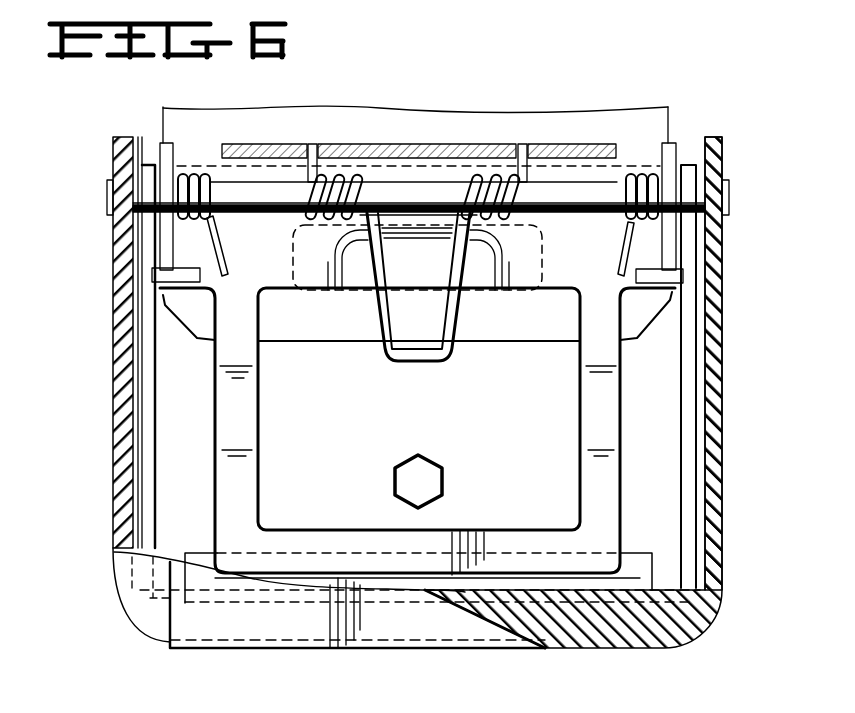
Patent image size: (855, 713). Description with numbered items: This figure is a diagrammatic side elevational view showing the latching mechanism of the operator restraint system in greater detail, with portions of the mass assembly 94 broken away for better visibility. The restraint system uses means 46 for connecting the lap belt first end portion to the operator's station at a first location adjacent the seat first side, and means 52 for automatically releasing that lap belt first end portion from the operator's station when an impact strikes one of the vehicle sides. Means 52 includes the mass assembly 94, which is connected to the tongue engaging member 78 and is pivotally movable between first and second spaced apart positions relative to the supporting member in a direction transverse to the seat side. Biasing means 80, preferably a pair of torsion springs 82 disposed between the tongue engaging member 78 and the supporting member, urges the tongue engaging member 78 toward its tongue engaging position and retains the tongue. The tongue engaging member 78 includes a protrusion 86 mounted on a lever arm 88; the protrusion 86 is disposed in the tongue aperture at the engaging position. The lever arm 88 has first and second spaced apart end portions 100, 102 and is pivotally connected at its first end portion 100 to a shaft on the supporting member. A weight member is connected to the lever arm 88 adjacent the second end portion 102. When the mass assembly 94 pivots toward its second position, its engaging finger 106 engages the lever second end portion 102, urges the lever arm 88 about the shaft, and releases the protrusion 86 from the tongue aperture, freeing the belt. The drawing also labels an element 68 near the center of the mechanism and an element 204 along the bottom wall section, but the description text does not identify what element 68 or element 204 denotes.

The means for connecting the lap belt first end portion 46 is at (668, 350).
The means for automatically releasing the lap belt first end portion 52 is at (118, 405).
The hex nut 68 is at (440, 480).
The tongue engaging member 78 is at (351, 293).
The biasing means 80 is at (196, 163).
The torsion springs 82 is at (228, 241).
The protrusion 86 is at (474, 280).
The lever arm 88 is at (250, 398).
The mass assembly 94 is at (304, 656).
The lever first end portion 100 is at (395, 160).
The lever second end portion 102 is at (365, 542).
The engaging finger 106 is at (203, 560).
The bottom wall section 204 is at (455, 632).